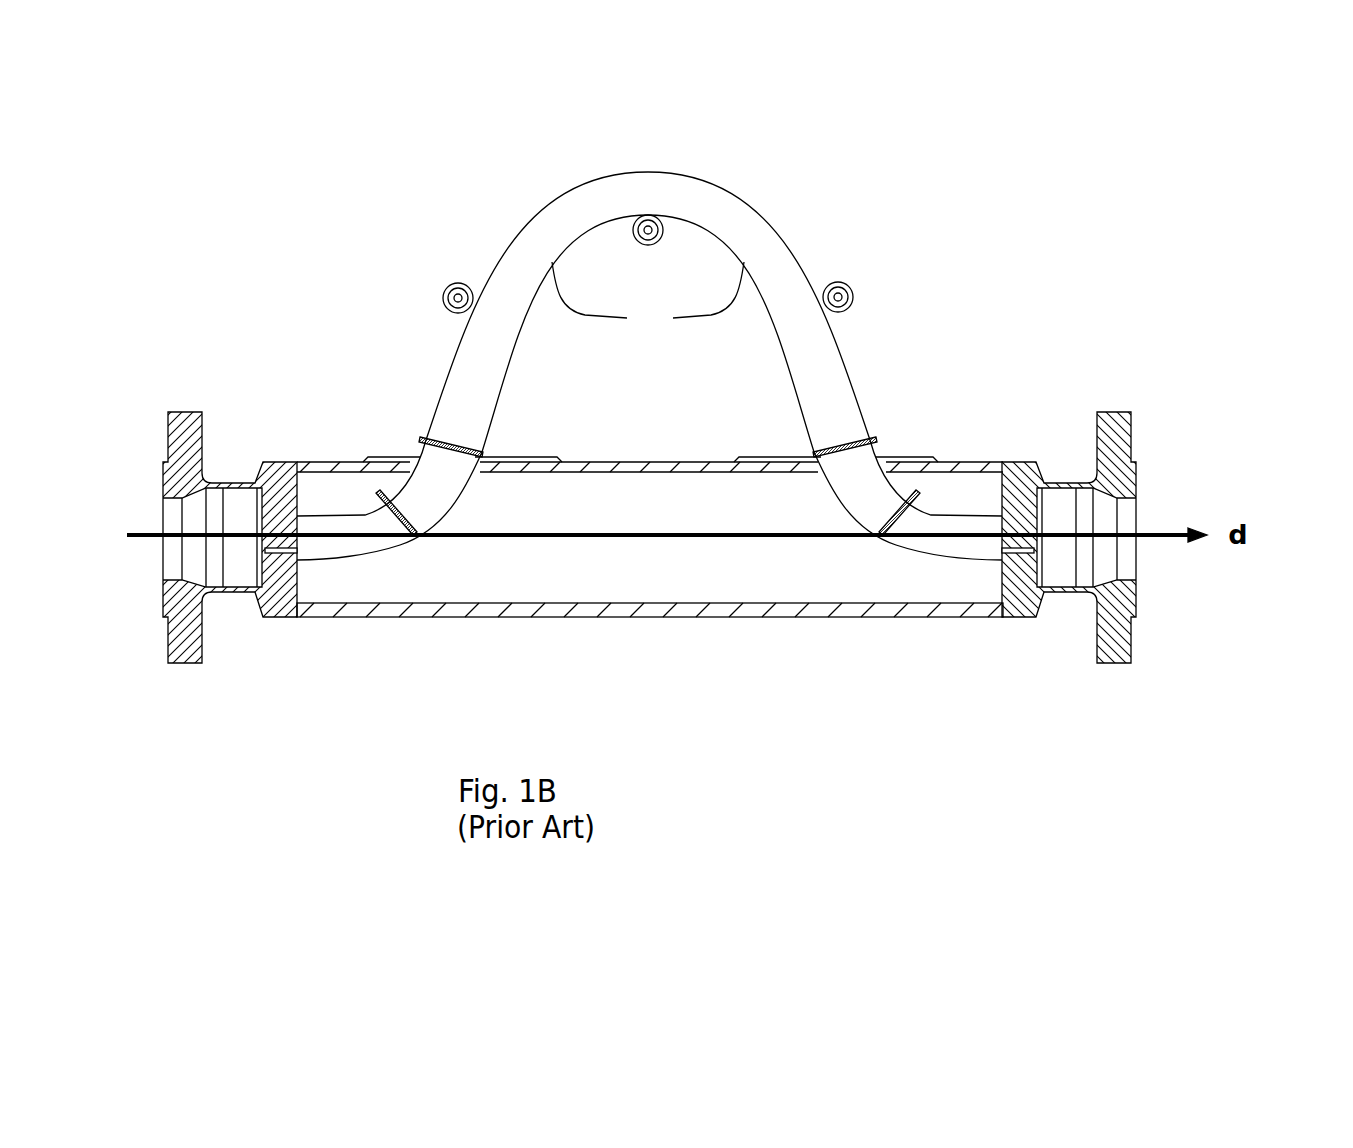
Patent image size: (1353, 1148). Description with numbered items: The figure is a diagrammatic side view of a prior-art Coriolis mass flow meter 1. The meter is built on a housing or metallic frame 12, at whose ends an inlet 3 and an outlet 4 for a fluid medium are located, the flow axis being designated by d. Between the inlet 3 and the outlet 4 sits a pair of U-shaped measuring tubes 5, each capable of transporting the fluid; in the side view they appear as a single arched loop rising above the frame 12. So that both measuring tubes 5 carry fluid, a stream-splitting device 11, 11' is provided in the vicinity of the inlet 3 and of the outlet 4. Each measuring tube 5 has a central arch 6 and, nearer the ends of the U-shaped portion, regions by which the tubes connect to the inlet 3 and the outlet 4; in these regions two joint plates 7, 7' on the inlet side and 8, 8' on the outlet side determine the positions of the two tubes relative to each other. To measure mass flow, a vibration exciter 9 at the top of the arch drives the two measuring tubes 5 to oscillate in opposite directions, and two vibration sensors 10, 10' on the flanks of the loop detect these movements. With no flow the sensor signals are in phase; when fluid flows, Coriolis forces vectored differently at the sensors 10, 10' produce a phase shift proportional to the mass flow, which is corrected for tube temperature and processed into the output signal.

The Coriolis mass flow meter 1 is at (1115, 244).
The inlet 3 is at (353, 537).
The outlet 4 is at (946, 525).
The U-shaped measuring tubes 5 is at (687, 190).
The central arch 6 is at (648, 294).
The joint plate 7 is at (400, 410).
The joint plate 7' is at (298, 435).
The joint plate 8 is at (906, 362).
The joint plate 8' is at (988, 418).
The vibration exciter 9 is at (632, 220).
The vibration sensor 10 is at (364, 242).
The vibration sensor 10' is at (928, 240).
The stream-splitting device 11 is at (253, 589).
The stream-splitting device 11' is at (1138, 561).
The metallic frame 12 is at (631, 568).